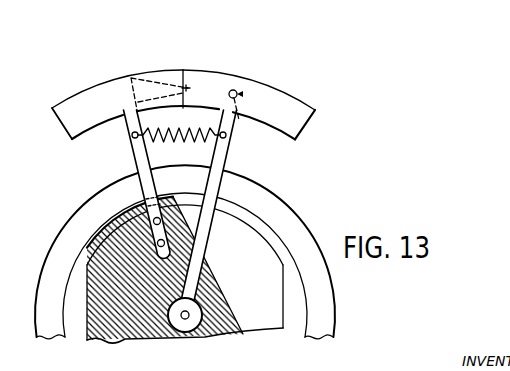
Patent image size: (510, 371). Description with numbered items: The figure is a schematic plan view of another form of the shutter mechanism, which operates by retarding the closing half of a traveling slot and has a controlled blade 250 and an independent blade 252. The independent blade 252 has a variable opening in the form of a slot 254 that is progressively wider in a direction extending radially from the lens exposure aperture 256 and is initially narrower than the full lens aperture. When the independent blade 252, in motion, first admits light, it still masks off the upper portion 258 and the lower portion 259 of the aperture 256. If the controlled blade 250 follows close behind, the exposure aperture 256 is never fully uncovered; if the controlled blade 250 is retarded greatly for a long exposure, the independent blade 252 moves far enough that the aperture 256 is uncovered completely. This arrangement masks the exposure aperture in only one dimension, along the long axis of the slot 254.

The controlled blade 250 is at (78, 100).
The independent blade 252 is at (288, 100).
The slot 254 is at (160, 78).
The lens exposure aperture 256 is at (243, 94).
The upper portion 258 is at (234, 90).
The lower portion 259 is at (239, 120).